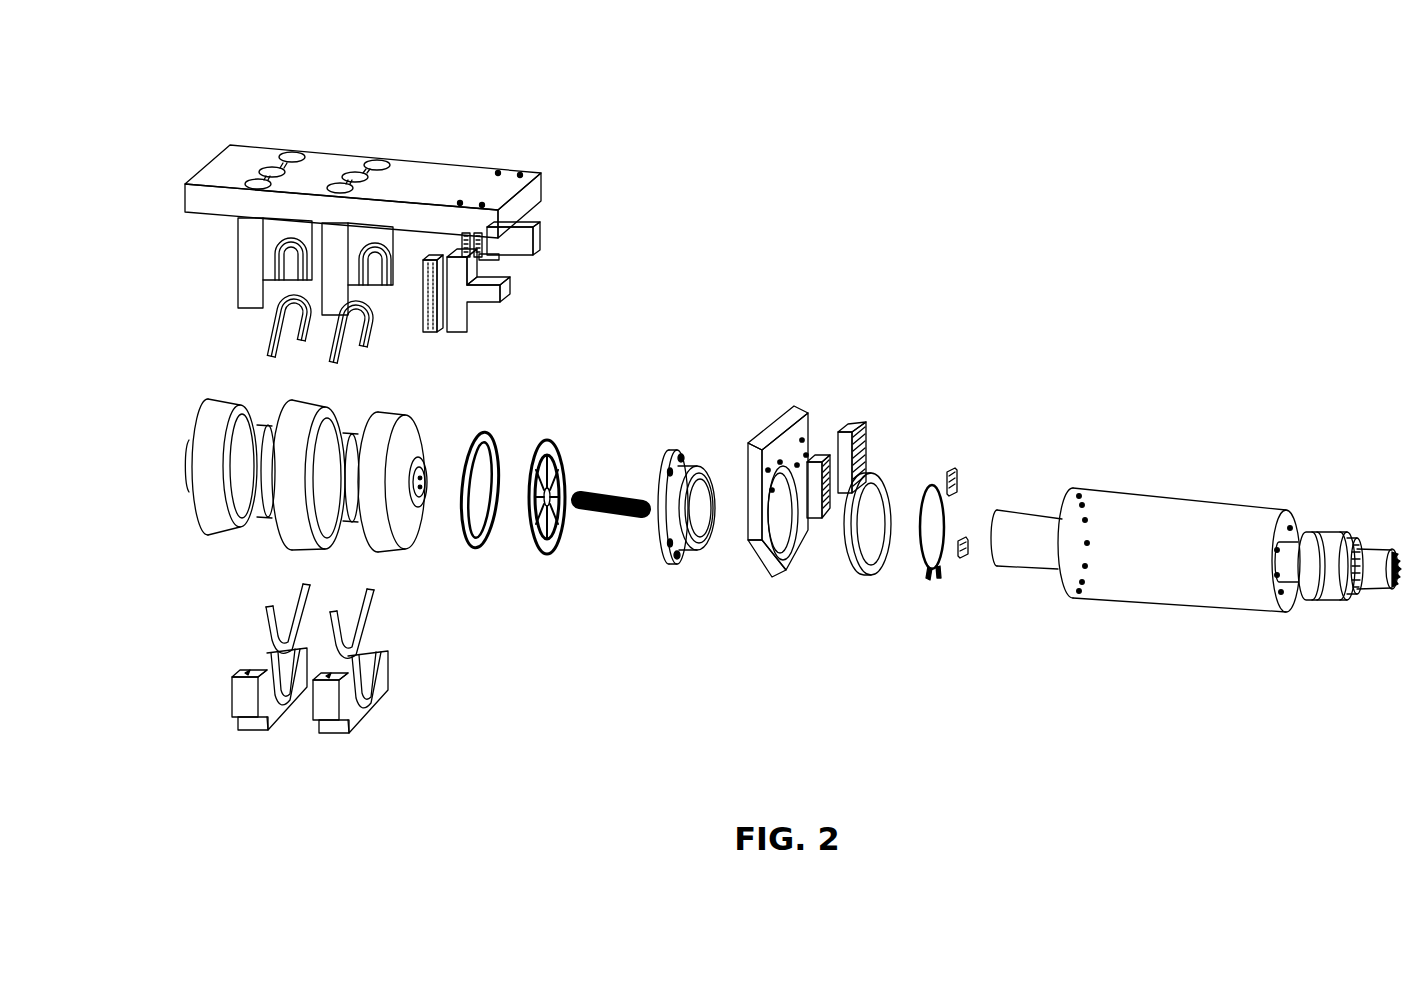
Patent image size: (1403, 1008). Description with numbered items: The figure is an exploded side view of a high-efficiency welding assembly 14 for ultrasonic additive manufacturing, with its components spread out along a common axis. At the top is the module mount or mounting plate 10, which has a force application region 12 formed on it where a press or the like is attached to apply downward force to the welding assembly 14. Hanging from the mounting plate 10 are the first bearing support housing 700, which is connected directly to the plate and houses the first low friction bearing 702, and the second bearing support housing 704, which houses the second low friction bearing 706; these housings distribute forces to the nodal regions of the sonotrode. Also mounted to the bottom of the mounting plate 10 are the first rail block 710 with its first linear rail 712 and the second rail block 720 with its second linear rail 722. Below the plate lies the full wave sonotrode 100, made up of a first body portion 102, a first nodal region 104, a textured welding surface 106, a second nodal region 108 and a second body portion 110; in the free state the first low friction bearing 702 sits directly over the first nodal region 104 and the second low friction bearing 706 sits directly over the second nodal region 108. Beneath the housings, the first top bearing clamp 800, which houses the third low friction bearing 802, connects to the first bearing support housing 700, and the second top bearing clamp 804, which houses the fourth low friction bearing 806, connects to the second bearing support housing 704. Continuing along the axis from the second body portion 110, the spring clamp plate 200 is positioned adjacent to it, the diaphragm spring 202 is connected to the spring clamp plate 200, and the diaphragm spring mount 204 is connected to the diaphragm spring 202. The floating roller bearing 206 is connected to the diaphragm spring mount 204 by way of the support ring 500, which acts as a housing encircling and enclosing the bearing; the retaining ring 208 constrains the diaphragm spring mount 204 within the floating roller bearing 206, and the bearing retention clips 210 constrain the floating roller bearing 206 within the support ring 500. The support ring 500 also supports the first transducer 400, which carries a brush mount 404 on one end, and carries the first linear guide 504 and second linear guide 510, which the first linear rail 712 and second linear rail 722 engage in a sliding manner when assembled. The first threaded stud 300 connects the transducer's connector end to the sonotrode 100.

The mounting plate 10 is at (343, 193).
The force application region 12 is at (325, 163).
The welding assembly 14 is at (624, 668).
The full wave sonotrode 100 is at (304, 479).
The first body portion 102 is at (212, 524).
The first nodal region 104 is at (258, 507).
The textured welding surface 106 is at (307, 394).
The second nodal region 108 is at (344, 502).
The second body portion 110 is at (402, 415).
The spring clamp plate 200 is at (482, 547).
The diaphragm spring 202 is at (556, 438).
The diaphragm spring mount 204 is at (668, 560).
The floating roller bearing 206 is at (866, 573).
The retaining ring 208 is at (922, 562).
The bearing retention clips 210 is at (955, 470).
The first threaded stud 300 is at (605, 490).
The first transducer 400 is at (1110, 590).
The brush mount 404 is at (1322, 598).
The support ring 500 is at (784, 408).
The first linear guide 504 is at (822, 522).
The second linear guide 510 is at (858, 428).
The first bearing support housing 700 is at (255, 266).
The first low friction bearing 702 is at (272, 333).
The second bearing support housing 704 is at (385, 253).
The second low friction bearing 706 is at (378, 333).
The first rail block 710 is at (513, 284).
The first linear rail 712 is at (428, 258).
The second rail block 720 is at (543, 228).
The second linear rail 722 is at (468, 232).
The first top bearing clamp 800 is at (252, 733).
The third low friction bearing 802 is at (267, 618).
The second top bearing clamp 804 is at (333, 738).
The fourth low friction bearing 806 is at (362, 620).